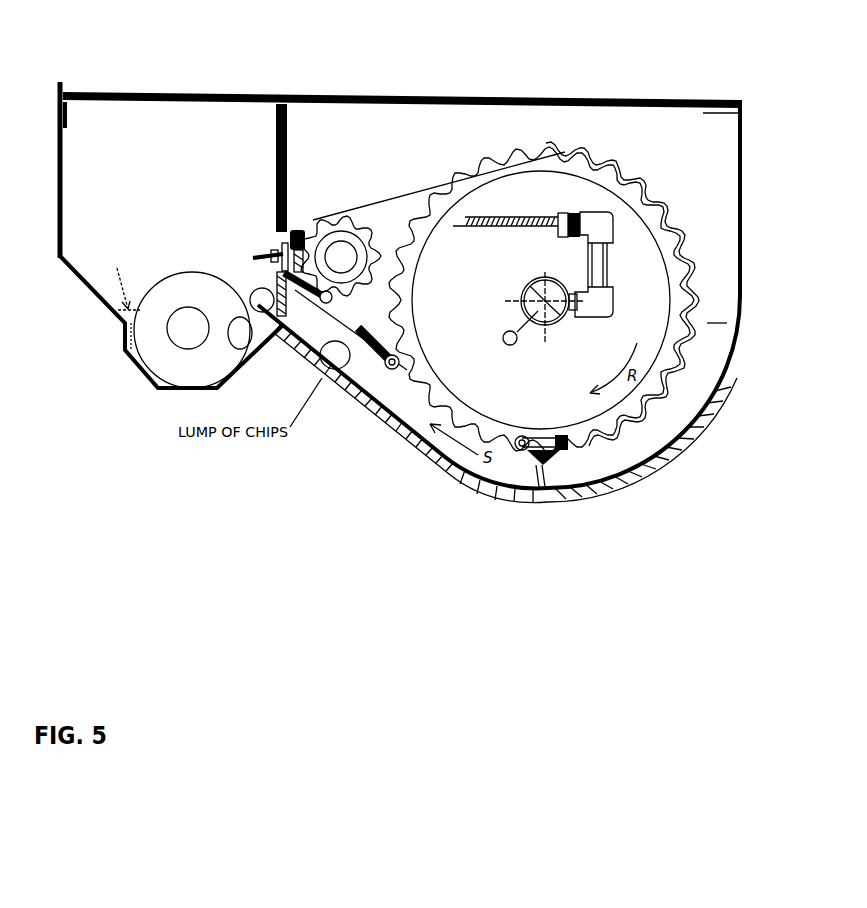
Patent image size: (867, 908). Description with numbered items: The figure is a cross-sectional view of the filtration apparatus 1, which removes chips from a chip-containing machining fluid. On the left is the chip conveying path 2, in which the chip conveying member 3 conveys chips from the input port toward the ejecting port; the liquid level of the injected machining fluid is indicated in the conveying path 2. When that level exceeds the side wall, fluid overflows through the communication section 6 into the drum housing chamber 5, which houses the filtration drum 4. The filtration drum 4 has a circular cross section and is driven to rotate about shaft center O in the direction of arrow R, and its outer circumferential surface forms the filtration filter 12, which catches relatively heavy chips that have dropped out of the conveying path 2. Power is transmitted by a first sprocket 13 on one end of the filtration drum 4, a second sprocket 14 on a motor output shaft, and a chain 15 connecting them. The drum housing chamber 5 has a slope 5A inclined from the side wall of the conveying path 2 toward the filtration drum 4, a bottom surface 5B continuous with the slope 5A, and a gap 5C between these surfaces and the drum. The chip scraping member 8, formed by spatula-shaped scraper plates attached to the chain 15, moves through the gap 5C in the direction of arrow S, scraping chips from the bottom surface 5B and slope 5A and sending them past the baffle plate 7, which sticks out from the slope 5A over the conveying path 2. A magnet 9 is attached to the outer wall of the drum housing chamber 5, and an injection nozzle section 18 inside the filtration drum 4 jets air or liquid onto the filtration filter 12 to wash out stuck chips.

The filtration apparatus 1 is at (677, 52).
The chip conveying path 2 is at (156, 386).
The chip conveying member 3 is at (180, 272).
The filtration drum 4 is at (547, 192).
The drum housing chamber 5 is at (720, 294).
The slope 5A is at (457, 447).
The bottom surface 5B is at (615, 478).
The gap 5C is at (447, 448).
The communication section 6 is at (275, 160).
The baffle plate 7 is at (276, 338).
The chip scraping member 8 is at (262, 250).
The magnet 9 is at (355, 378).
The filtration filter 12 is at (643, 203).
The first sprocket 13 is at (460, 182).
The second sprocket 14 is at (355, 215).
The chain 15 is at (422, 189).
The injection nozzle section 18 is at (562, 238).